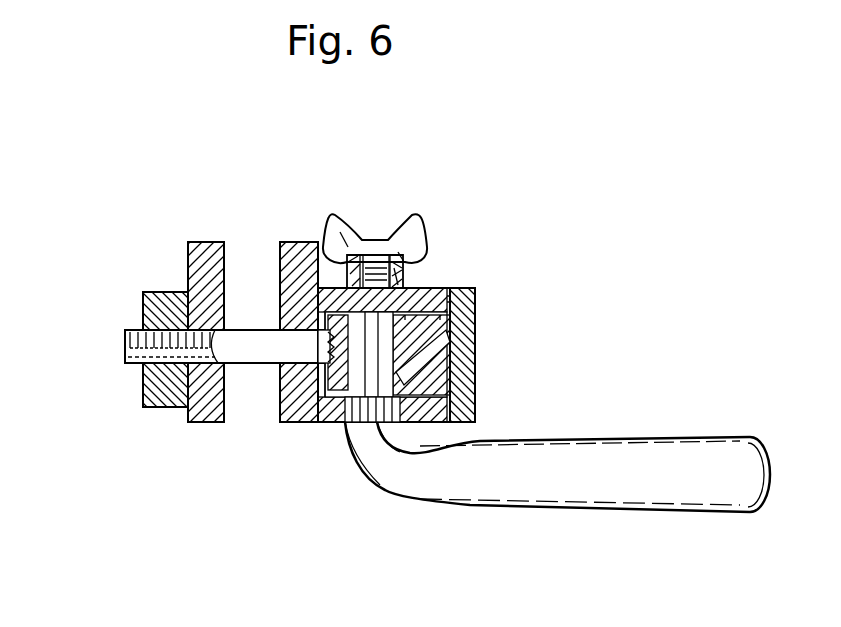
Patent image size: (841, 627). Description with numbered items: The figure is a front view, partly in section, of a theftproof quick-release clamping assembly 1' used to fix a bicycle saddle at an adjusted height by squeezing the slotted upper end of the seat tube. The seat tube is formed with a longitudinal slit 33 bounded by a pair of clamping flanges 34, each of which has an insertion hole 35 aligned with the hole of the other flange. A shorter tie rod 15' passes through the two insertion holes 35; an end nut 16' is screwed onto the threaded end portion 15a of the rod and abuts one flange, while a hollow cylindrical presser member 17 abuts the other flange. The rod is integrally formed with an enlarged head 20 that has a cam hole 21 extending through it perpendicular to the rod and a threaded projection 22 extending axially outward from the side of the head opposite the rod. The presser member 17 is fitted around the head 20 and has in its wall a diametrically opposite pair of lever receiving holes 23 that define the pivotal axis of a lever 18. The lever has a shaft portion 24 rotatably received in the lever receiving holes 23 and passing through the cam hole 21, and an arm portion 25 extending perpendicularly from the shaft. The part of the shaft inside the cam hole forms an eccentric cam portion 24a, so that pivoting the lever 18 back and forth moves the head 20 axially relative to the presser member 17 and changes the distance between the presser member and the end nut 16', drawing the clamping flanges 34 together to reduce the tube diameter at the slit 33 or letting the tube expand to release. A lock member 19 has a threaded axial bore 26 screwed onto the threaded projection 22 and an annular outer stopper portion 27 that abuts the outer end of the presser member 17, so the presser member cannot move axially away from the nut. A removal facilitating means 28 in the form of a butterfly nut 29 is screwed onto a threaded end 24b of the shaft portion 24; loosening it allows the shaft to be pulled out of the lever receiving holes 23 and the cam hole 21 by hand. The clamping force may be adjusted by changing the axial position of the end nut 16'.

The clamping assembly 1' is at (647, 307).
The tie rod 15' is at (227, 419).
The threaded end portion 15a is at (145, 316).
The end nut 16' is at (144, 305).
The presser member 17 is at (445, 290).
The lever 18 is at (510, 510).
The lock member 19 is at (477, 407).
The enlarged head 20 is at (368, 333).
The cam hole 21 is at (355, 425).
The threaded projection 22 is at (462, 345).
The lever receiving holes 23 is at (372, 255).
The shaft portion 24 is at (380, 415).
The cam portion 24a is at (398, 258).
The threaded end 24b is at (398, 270).
The arm portion 25 is at (612, 513).
The threaded axial bore 26 is at (465, 303).
The stopper portion 27 is at (478, 287).
The removal facilitating means 28 is at (432, 222).
The butterfly nut 29 is at (348, 235).
The longitudinal slit 33 is at (255, 268).
The clamping flanges 34 is at (205, 425).
The insertion hole 35 is at (240, 333).